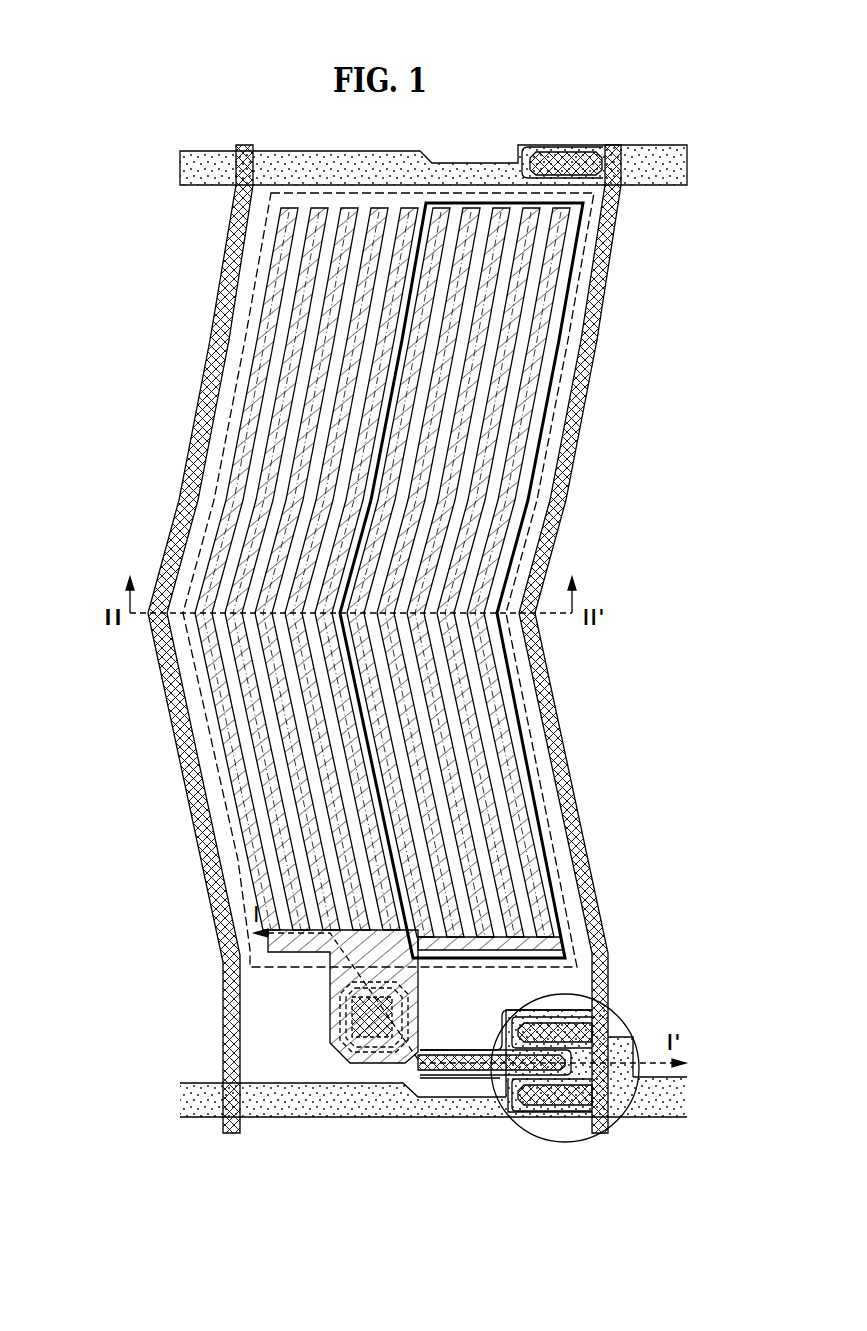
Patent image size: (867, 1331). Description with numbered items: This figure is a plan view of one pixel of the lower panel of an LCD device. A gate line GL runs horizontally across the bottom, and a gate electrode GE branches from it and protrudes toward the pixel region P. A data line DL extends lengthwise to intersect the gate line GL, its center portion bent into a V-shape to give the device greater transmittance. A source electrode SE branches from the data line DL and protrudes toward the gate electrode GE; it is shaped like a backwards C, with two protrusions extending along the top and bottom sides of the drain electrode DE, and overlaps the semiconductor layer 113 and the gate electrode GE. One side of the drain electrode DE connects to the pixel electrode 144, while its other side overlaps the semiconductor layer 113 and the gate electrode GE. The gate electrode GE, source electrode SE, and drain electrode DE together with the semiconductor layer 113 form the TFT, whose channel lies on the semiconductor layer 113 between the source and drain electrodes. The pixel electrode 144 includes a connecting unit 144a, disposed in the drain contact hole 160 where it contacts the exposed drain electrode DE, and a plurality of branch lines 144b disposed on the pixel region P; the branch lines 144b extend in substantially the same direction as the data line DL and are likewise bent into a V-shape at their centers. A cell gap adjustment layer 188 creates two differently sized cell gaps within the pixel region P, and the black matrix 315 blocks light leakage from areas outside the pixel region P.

The cell gap adjustment layer 188 is at (561, 327).
The black matrix 315 is at (207, 727).
The data line DL is at (562, 745).
The pixel region P is at (234, 806).
The pixel electrode 144 is at (120, 892).
The branch lines 144b is at (268, 878).
The connecting unit 144a is at (340, 1012).
The gate electrode GE is at (567, 1012).
The thin film transistor TFT is at (622, 1008).
The gate line GL is at (303, 1117).
The drain contact hole 160 is at (367, 1062).
The drain electrode DE is at (453, 1076).
The semiconductor layer 113 is at (520, 1105).
The source electrode SE is at (558, 1105).